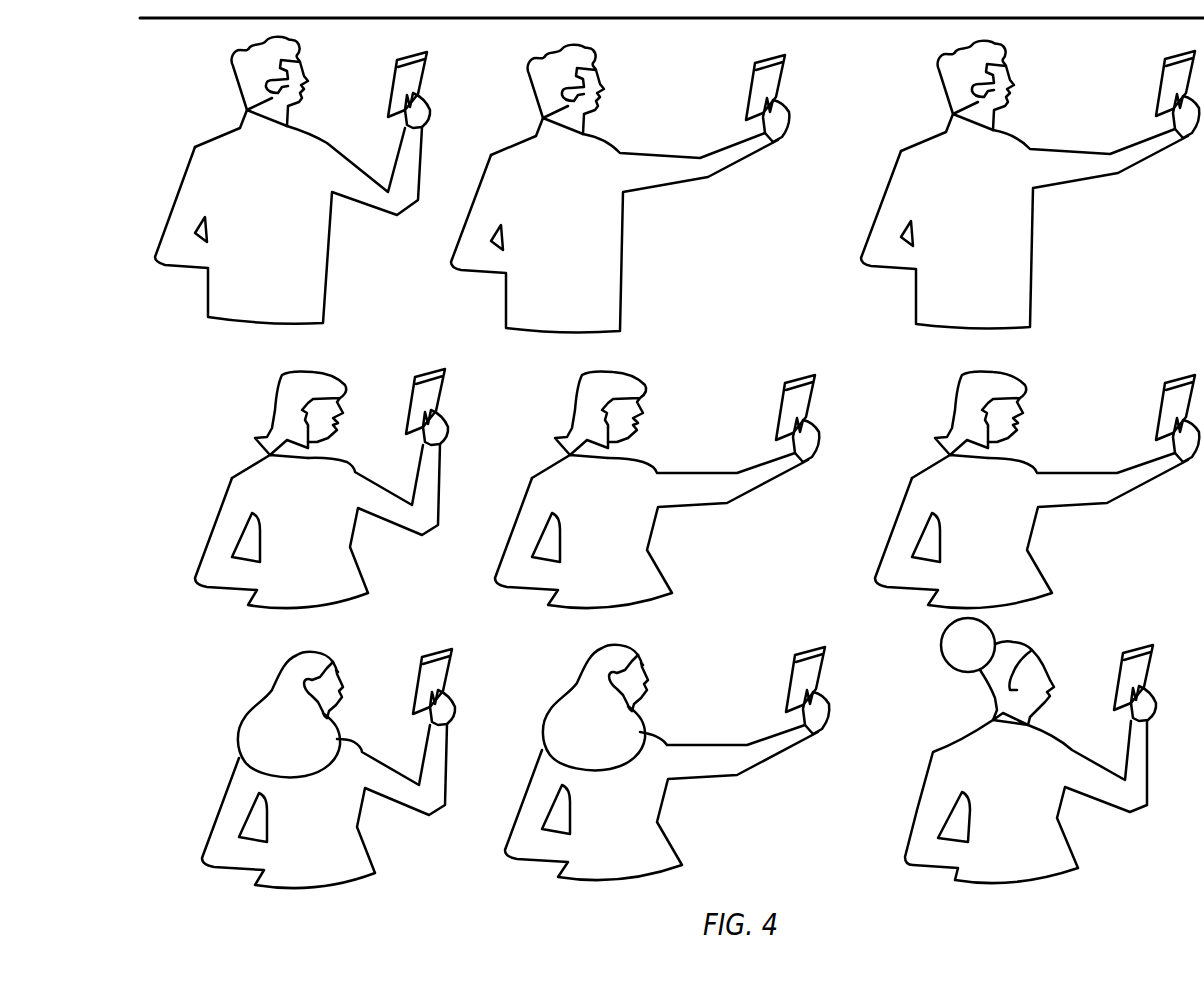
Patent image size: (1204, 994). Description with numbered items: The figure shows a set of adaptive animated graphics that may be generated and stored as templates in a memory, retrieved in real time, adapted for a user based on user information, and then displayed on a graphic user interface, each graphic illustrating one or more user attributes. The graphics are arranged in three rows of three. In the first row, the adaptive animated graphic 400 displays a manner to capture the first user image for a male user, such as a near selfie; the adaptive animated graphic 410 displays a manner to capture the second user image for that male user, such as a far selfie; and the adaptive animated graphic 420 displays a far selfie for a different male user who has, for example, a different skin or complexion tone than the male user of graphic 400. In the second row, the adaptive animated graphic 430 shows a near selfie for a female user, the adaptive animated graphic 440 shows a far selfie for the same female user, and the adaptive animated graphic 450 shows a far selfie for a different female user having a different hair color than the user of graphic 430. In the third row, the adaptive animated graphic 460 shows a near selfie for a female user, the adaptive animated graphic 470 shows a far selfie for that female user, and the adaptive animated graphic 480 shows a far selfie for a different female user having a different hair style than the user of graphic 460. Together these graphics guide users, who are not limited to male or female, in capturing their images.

The adaptive animated graphic 400 is at (292, 180).
The adaptive animated graphic 410 is at (620, 189).
The adaptive animated graphic 420 is at (1030, 185).
The adaptive animated graphic 430 is at (321, 488).
The adaptive animated graphic 440 is at (657, 489).
The adaptive animated graphic 450 is at (1037, 489).
The adaptive animated graphic 460 is at (328, 768).
The adaptive animated graphic 470 is at (667, 762).
The adaptive animated graphic 480 is at (1030, 750).